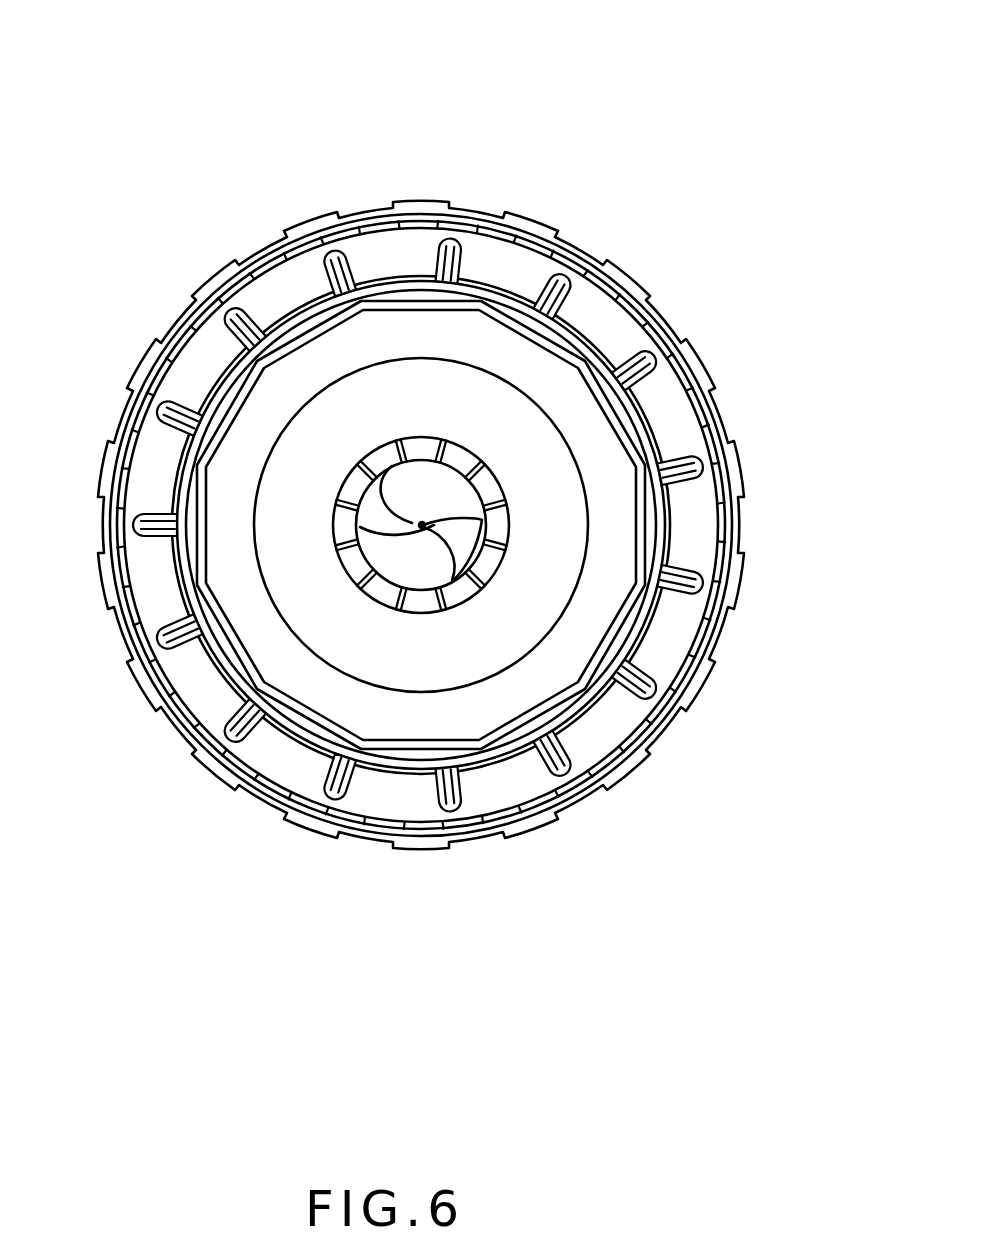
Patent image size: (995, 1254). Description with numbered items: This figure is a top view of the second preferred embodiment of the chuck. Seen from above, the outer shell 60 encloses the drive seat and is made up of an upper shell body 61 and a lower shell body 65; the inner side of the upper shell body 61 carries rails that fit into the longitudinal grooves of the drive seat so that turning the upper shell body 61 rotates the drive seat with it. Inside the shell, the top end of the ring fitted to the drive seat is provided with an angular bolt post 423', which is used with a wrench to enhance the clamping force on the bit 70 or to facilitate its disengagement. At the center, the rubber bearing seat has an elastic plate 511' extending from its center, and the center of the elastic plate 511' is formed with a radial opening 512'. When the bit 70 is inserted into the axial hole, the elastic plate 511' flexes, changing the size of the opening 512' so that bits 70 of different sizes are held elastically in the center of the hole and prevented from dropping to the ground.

The outer shell 60 is at (447, 195).
The upper shell body 61 is at (607, 326).
The lower shell body 65 is at (703, 371).
The angular bolt post 423' is at (551, 525).
The elastic plate 511' is at (297, 410).
The radial opening 512' is at (271, 617).
The bit 70 is at (428, 560).